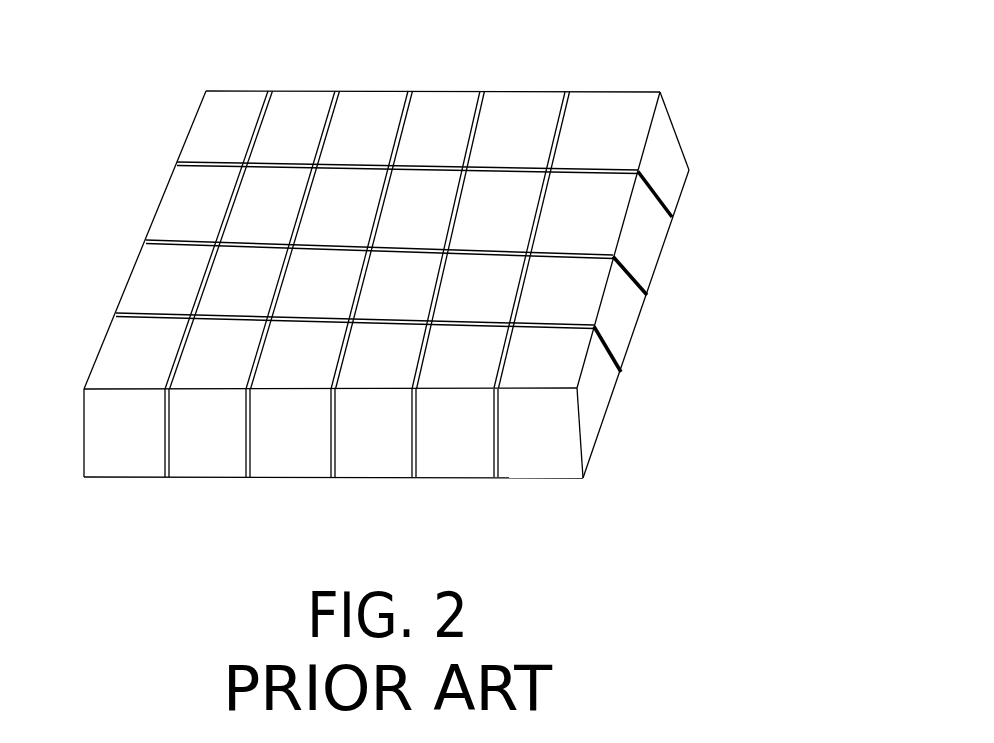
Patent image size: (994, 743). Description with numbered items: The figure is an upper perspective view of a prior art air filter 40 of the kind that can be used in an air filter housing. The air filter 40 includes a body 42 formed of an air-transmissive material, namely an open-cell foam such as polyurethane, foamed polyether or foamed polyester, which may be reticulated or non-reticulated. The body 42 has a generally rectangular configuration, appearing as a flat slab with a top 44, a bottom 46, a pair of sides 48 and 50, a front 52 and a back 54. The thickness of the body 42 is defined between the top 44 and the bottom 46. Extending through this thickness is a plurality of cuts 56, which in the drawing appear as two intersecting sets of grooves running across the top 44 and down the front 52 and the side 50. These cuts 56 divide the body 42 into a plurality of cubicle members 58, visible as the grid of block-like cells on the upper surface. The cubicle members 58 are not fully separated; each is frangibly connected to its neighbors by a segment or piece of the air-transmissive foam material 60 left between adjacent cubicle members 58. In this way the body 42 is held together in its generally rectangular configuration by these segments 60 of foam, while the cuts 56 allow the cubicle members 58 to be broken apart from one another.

The air filter 40 is at (378, 285).
The body 42 is at (300, 99).
The top 44 is at (172, 202).
The bottom 46 is at (217, 480).
The side 48 is at (132, 270).
The side 50 is at (628, 320).
The front 52 is at (543, 470).
The back 54 is at (424, 91).
The cuts 56 is at (395, 320).
The cubicle members 58 is at (608, 100).
The segment of air-transmissive foam material 60 is at (183, 350).